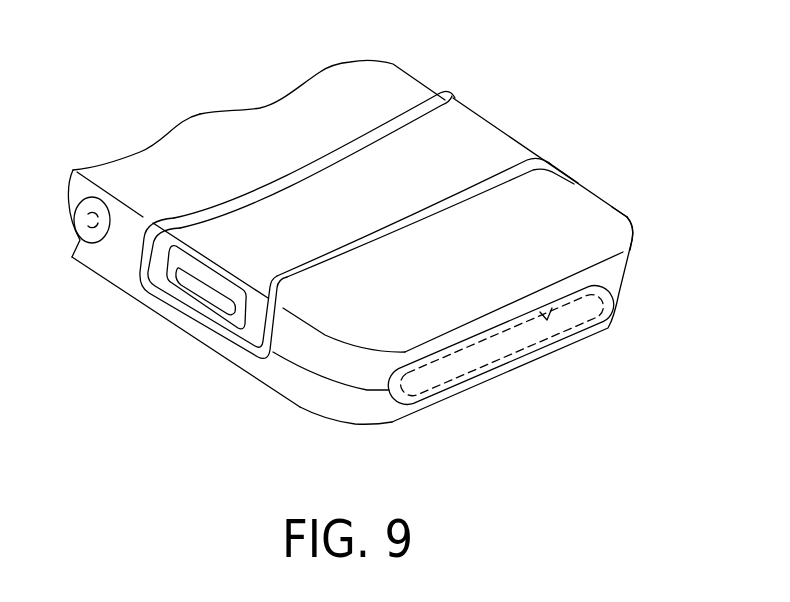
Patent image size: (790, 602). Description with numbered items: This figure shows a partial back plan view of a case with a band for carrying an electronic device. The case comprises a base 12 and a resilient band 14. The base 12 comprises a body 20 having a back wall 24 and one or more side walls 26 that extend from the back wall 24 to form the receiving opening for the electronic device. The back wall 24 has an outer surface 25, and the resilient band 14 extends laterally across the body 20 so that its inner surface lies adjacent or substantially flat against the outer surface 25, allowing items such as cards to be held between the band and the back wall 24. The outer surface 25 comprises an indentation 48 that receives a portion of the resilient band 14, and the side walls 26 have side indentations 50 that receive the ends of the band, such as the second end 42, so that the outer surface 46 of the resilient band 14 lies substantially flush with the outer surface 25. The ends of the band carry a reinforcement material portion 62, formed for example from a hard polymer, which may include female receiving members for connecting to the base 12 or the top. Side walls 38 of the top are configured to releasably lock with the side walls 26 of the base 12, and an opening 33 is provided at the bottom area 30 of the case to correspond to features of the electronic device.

The base 12 is at (599, 182).
The resilient band 14 is at (484, 106).
The body 20 is at (627, 217).
The back wall 24 is at (140, 168).
The outer surface 25 is at (286, 149).
The side walls 26 is at (345, 370).
The bottom area 30 is at (596, 378).
The opening 33 is at (617, 277).
The side walls 38 is at (280, 378).
The second end 42 is at (136, 310).
The outer surface 46 is at (507, 143).
The indentation 48 is at (417, 213).
The side indentations 50 is at (147, 256).
The reinforcement material portion 62 is at (217, 320).